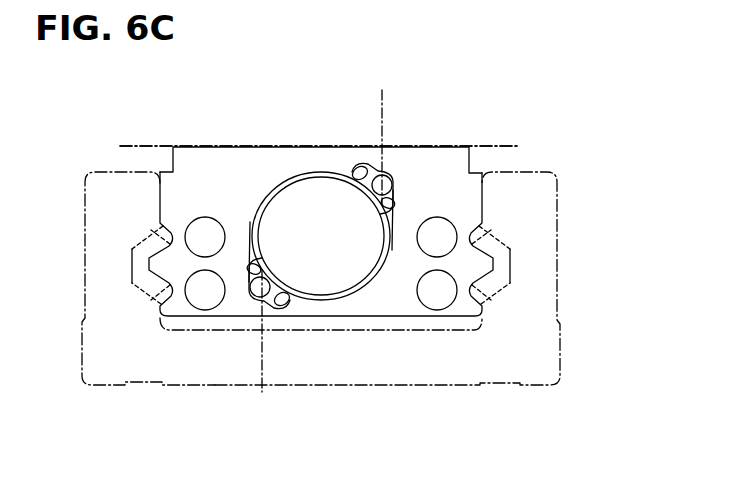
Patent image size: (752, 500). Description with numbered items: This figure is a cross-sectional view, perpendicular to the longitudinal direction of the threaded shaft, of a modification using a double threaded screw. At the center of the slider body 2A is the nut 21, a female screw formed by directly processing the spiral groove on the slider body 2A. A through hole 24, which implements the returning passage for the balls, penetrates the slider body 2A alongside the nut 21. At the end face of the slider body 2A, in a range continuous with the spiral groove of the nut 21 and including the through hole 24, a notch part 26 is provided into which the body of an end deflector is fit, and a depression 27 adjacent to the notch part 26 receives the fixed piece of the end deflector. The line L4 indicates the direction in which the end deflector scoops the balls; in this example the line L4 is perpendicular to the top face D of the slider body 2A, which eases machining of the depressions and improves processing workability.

The slider body 2A is at (213, 156).
The nut 21 is at (366, 284).
The through hole 24 is at (388, 176).
The notch part 26 is at (402, 207).
The depression 27 is at (360, 172).
The line L4 is at (372, 135).
The top face D is at (493, 144).